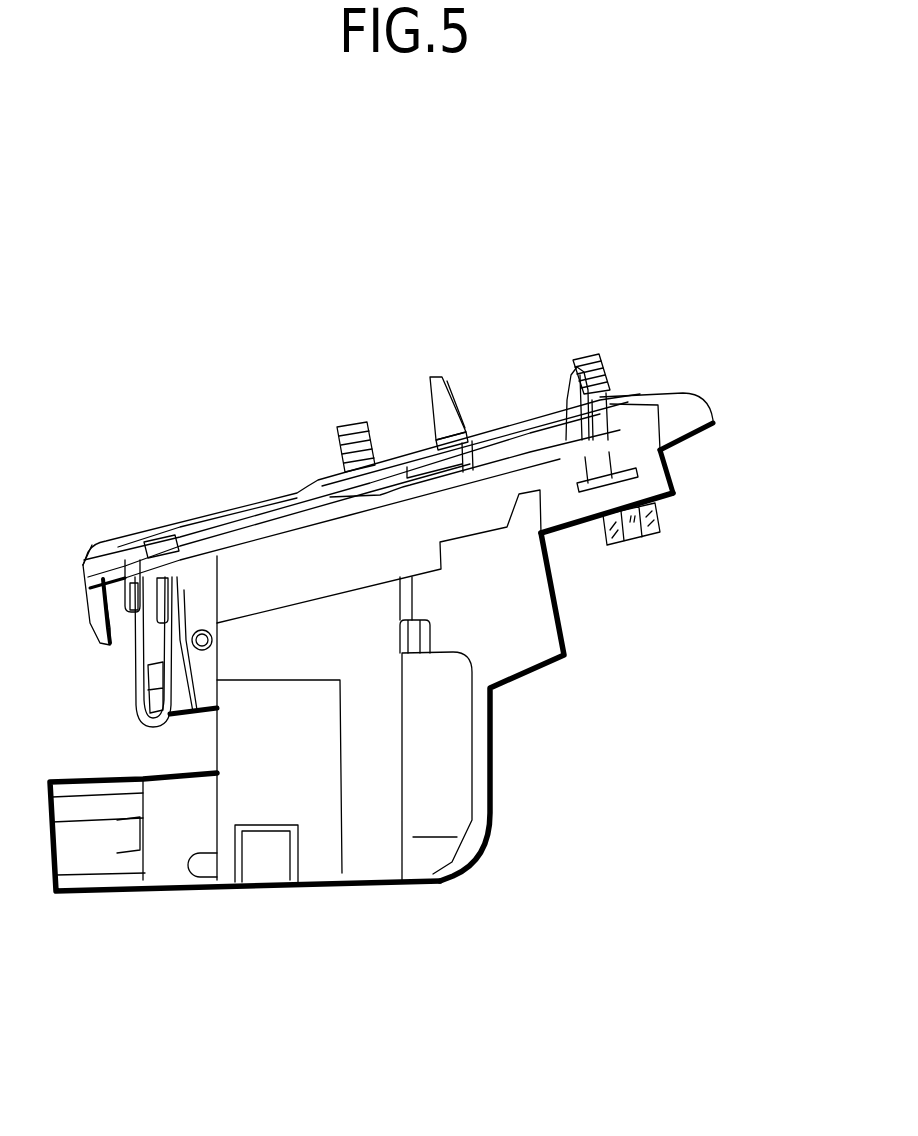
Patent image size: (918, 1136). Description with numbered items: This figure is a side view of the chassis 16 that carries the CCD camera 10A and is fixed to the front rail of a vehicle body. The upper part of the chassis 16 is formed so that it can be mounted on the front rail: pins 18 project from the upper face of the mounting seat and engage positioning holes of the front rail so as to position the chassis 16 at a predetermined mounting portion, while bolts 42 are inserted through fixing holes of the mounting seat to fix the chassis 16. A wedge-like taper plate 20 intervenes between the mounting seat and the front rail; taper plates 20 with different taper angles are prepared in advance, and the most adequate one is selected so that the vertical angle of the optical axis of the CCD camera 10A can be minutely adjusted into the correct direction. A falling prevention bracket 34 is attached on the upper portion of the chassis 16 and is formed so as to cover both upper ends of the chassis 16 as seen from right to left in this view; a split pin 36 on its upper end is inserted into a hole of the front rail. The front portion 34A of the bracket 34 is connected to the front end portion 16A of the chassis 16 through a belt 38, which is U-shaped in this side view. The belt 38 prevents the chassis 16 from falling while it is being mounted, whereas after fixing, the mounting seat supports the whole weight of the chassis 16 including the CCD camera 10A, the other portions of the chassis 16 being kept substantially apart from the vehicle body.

The CCD camera 10A is at (105, 865).
The chassis 16 is at (453, 581).
The front end portion of the chassis 16A is at (177, 597).
The pin 18 is at (440, 375).
The taper plate 20 is at (698, 408).
The falling prevention bracket 34 is at (270, 513).
The front portion of the bracket 34A is at (124, 552).
The split pin 36 is at (568, 395).
The belt 38 is at (130, 660).
The bolt 42 is at (352, 424).